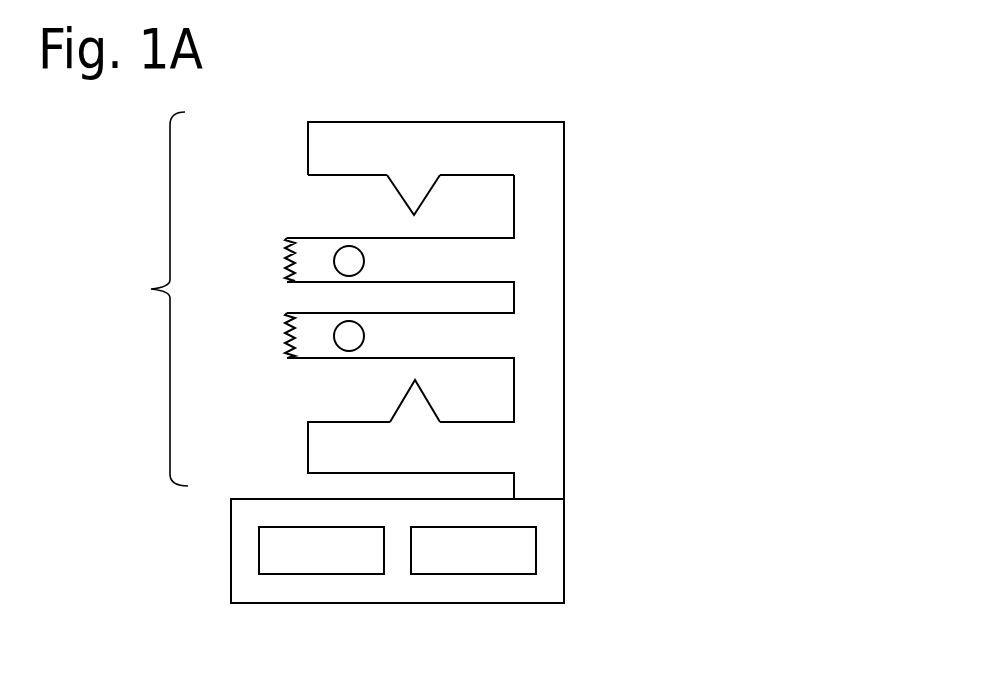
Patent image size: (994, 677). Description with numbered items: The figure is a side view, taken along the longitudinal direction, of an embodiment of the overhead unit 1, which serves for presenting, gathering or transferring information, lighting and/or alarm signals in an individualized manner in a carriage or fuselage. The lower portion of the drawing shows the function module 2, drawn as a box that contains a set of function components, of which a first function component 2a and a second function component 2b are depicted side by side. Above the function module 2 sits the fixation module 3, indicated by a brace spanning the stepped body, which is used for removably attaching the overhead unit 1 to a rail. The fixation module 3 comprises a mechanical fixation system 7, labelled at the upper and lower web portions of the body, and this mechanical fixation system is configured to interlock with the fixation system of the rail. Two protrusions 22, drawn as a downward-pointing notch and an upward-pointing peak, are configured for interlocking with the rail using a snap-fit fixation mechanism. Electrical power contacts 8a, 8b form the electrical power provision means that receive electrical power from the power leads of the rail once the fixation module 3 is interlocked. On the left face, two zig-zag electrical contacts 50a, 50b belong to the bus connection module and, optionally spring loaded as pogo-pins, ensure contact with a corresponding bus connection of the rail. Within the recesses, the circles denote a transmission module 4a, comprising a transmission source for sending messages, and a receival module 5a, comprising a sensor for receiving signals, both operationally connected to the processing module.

The overhead unit 1 is at (295, 148).
The function module 2 is at (527, 513).
The function component 2a is at (321, 550).
The function component 2b is at (473, 550).
The fixation module 3 is at (159, 299).
The transmission module 4a is at (350, 262).
The receival module 5a is at (350, 335).
The mechanical fixation system 7 is at (427, 160).
The electrical power contact 8a is at (311, 253).
The electrical power contact 8b is at (315, 360).
The protrusion 22 is at (417, 187).
The electrical contact 50a is at (285, 263).
The electrical contact 50b is at (285, 346).